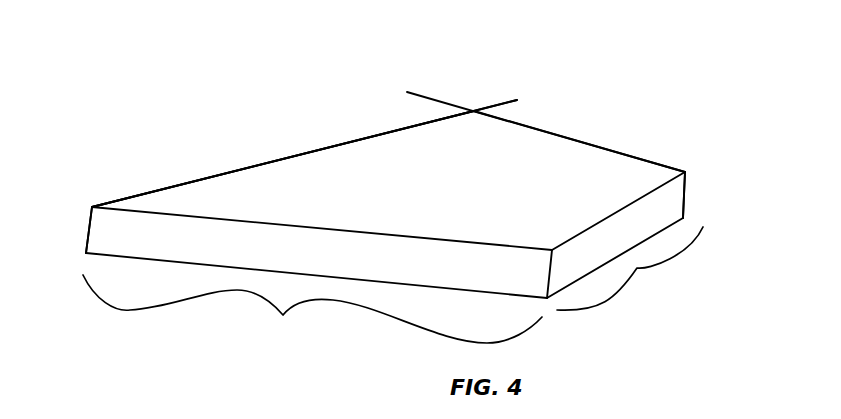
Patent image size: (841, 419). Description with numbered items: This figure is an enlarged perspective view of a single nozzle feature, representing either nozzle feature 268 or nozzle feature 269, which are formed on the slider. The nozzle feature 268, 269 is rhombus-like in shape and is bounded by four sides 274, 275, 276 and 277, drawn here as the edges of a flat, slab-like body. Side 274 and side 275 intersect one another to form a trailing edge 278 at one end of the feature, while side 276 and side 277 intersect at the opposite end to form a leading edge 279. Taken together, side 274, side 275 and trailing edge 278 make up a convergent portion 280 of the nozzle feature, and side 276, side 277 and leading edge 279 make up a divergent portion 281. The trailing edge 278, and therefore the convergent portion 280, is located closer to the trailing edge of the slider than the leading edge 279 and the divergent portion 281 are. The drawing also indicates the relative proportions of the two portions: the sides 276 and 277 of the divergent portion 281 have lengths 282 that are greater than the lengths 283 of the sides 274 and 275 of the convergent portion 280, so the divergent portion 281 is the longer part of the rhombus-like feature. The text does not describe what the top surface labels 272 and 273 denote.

The nozzle feature 268 is at (415, 181).
The nozzle feature 269 is at (593, 76).
The top surface 272 is at (388, 144).
The top surface 273 is at (445, 175).
The side 274 is at (520, 108).
The side 275 is at (665, 202).
The side 276 is at (318, 147).
The side 277 is at (128, 237).
The trailing edge 278 is at (685, 210).
The leading edge 279 is at (85, 244).
The convergent portion 280 is at (630, 268).
The divergent portion 281 is at (312, 310).
The length 282 is at (22, 200).
The length 283 is at (720, 152).